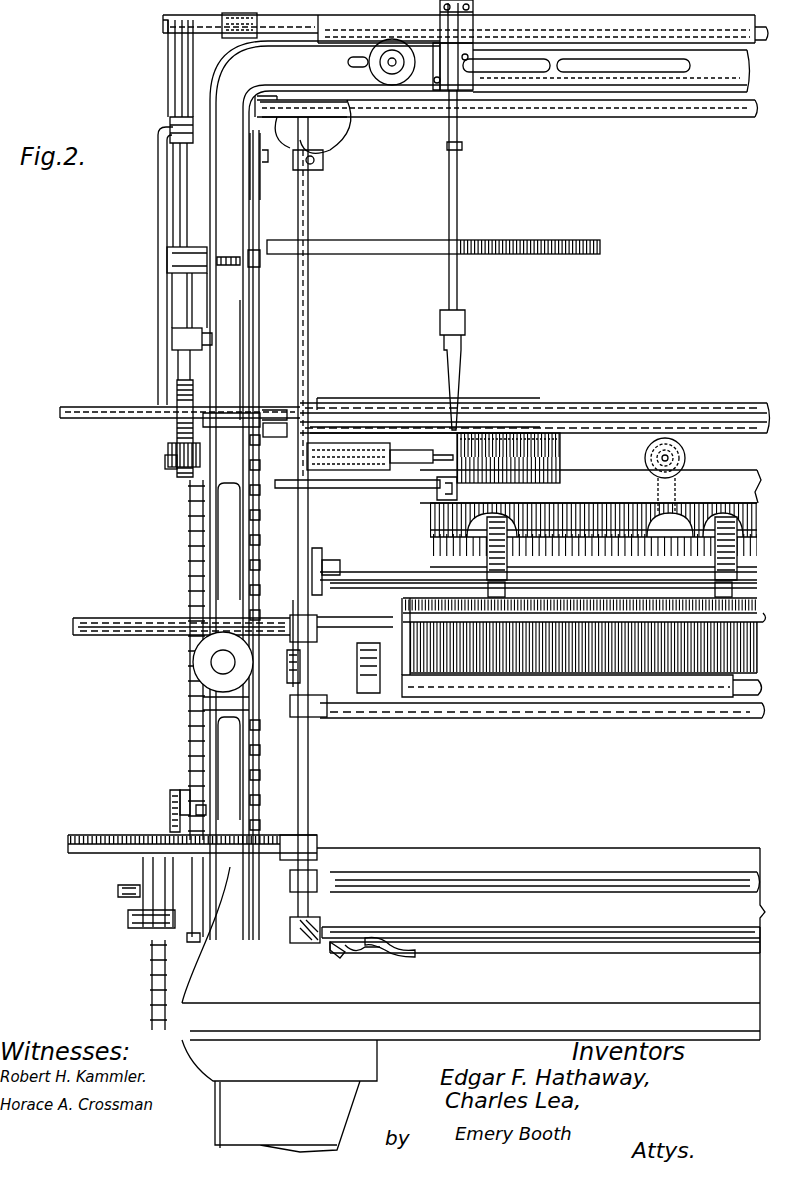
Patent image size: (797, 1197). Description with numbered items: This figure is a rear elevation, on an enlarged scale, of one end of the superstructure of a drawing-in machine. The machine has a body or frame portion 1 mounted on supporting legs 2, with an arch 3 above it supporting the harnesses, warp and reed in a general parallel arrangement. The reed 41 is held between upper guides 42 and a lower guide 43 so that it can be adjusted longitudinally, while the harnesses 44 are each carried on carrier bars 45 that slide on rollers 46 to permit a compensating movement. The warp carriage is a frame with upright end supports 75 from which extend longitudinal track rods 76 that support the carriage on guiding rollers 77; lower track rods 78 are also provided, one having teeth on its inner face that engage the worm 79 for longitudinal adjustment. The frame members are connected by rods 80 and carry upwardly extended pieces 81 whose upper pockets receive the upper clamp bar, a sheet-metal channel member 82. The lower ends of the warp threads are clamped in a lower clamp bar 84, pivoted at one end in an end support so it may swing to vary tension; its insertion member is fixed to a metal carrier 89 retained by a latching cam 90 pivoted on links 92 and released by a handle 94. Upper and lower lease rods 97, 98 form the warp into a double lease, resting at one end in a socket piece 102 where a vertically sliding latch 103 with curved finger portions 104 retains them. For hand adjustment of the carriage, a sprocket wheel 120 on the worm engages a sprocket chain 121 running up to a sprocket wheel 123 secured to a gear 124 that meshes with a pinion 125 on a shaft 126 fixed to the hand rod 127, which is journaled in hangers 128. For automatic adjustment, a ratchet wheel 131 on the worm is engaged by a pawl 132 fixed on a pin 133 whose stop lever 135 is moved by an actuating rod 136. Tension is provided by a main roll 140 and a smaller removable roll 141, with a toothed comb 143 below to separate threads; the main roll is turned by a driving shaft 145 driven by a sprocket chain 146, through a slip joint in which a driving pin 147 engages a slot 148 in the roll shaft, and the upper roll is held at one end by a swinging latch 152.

The body or frame portion 1 is at (248, 962).
The supporting legs 2 is at (243, 1097).
The arch 3 is at (635, 53).
The reed 41 is at (420, 627).
The upper guides 42 is at (493, 588).
The lower guide 43 is at (556, 685).
The harnesses 44 is at (440, 545).
The carrier bars 45 is at (518, 28).
The rollers 46 is at (394, 85).
The upright end supports 75 is at (308, 753).
The longitudinal track rods 76 is at (162, 625).
The guiding rollers 77 is at (205, 660).
The lower track rods 78 is at (102, 853).
The worm 79 is at (182, 792).
The rods 80 is at (690, 713).
The upwardly extended pieces 81 is at (298, 528).
The channel member 82 is at (390, 245).
The lower clamp bar 84 is at (400, 928).
The metal carrier 89 is at (460, 945).
The retaining latching cam 90 is at (350, 955).
The links 92 is at (335, 955).
The handle 94 is at (392, 955).
The upper lease rod 97 is at (330, 575).
The lower lease rod 98 is at (385, 612).
The socket piece 102 is at (332, 572).
The vertically sliding latch 103 is at (318, 560).
The curved finger portions 104 is at (320, 566).
The sprocket wheel 120 is at (206, 812).
The sprocket chain 121 is at (190, 697).
The sprocket wheel 123 is at (172, 470).
The gear 124 is at (168, 438).
The pinion 125 is at (177, 391).
The shaft 126 is at (258, 403).
The hand rod 127 is at (535, 410).
The hangers 128 is at (170, 360).
The ratchet wheel 131 is at (170, 799).
The pawl 132 is at (168, 900).
The pin 133 is at (148, 927).
The stop lever 135 is at (140, 912).
The actuating rod 136 is at (120, 892).
The main roll 140 is at (540, 445).
The roll 141 is at (478, 430).
The toothed comb 143 is at (418, 463).
The driving shaft 145 is at (266, 410).
The sprocket chain 146 is at (258, 557).
The driving pin 147 is at (370, 445).
The slot 148 is at (390, 450).
The swinging latch 152 is at (320, 410).